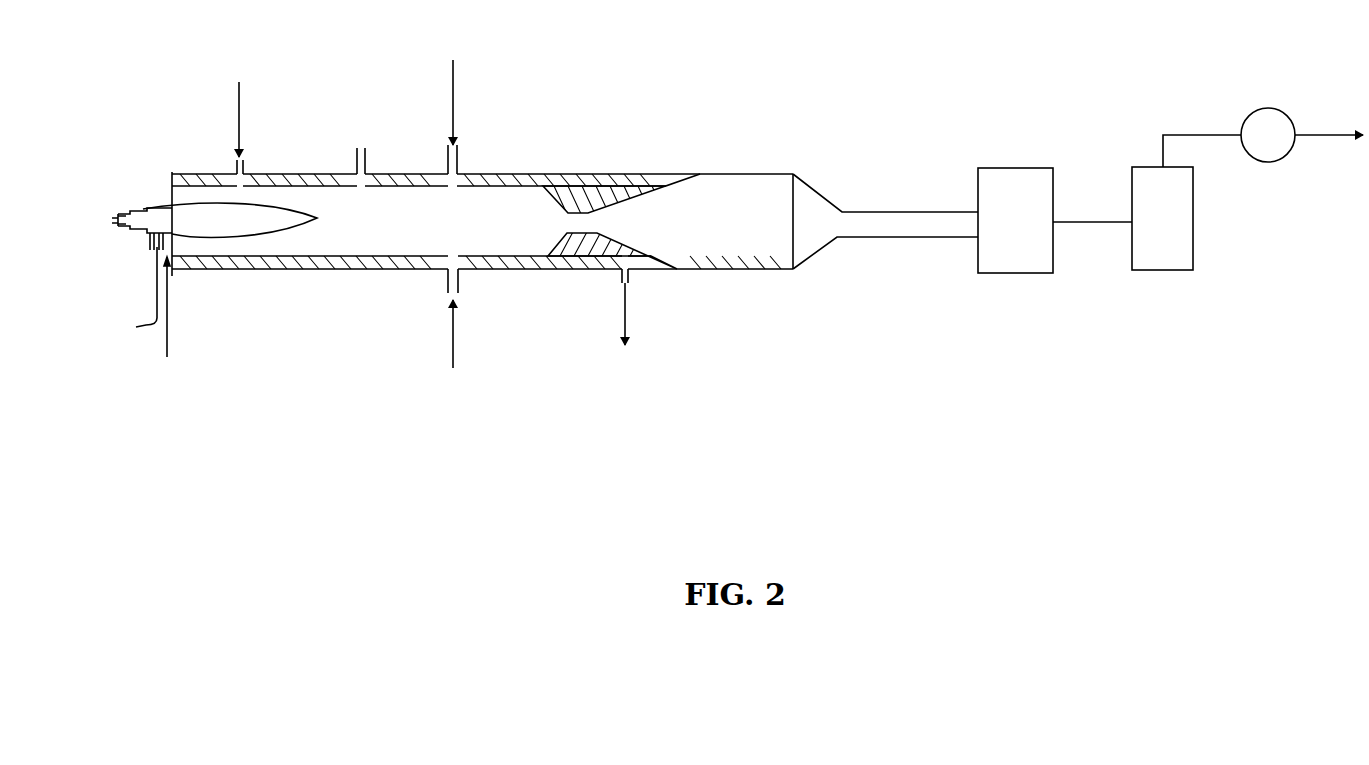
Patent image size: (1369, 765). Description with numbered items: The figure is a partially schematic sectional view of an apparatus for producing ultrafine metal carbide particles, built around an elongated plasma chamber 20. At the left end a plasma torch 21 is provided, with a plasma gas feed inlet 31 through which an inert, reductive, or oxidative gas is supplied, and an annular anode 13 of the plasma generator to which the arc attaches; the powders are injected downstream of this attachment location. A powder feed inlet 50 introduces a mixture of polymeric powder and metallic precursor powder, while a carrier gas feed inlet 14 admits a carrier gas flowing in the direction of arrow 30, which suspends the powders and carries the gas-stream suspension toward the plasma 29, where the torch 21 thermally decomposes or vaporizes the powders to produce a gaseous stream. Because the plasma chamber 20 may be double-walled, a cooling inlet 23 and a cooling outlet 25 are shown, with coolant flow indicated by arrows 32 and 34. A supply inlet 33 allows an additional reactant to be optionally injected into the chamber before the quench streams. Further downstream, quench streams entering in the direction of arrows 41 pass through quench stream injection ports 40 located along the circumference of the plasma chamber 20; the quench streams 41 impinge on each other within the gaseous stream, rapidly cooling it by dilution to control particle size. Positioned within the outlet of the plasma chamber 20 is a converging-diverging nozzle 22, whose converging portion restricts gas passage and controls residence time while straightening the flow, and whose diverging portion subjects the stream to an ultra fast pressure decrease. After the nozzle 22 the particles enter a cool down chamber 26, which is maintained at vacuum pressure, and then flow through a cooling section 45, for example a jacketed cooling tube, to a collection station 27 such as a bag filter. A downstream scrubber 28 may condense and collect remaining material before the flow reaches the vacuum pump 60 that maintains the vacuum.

The annular anode 13 is at (158, 207).
The carrier gas feed inlet 14 is at (131, 293).
The plasma chamber 20 is at (337, 307).
The plasma torch 21 is at (183, 175).
The converging-diverging nozzle 22 is at (572, 200).
The cooling inlet 23 is at (245, 163).
The cooling outlet 25 is at (632, 282).
The cool down chamber 26 is at (740, 270).
The collection station 27 is at (1005, 229).
The scrubber 28 is at (1152, 229).
The plasma 29 is at (212, 232).
The arrow indicating carrier gas flow direction 30 is at (172, 320).
The plasma gas feed inlet 31 is at (123, 217).
The coolant flow arrow 32 is at (240, 108).
The supply inlet for additional reactant 33 is at (365, 155).
The coolant flow arrow 34 is at (618, 325).
The quench stream injection ports 40 is at (460, 155).
The quench streams 41 is at (450, 80).
The cooling section 45 is at (895, 212).
The powder feed inlet 50 is at (147, 240).
The vacuum pump 60 is at (1265, 108).